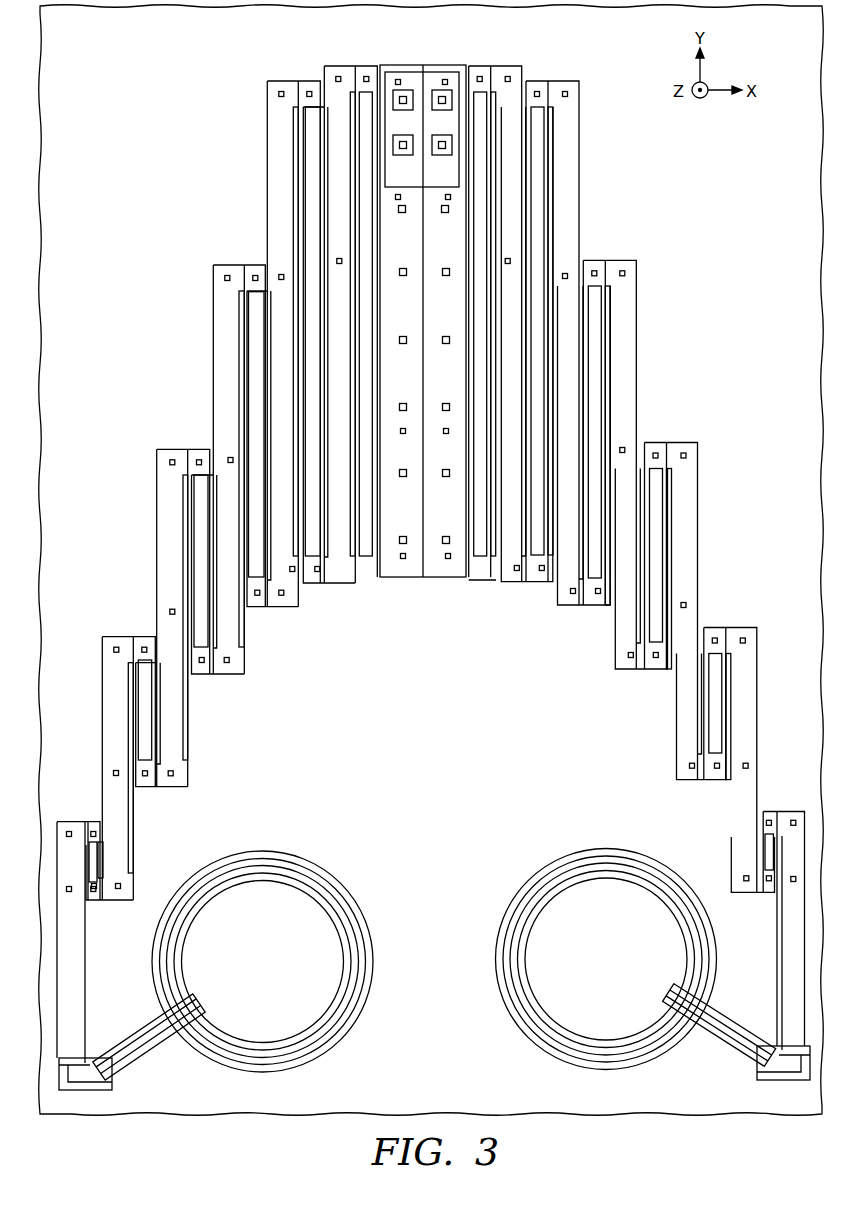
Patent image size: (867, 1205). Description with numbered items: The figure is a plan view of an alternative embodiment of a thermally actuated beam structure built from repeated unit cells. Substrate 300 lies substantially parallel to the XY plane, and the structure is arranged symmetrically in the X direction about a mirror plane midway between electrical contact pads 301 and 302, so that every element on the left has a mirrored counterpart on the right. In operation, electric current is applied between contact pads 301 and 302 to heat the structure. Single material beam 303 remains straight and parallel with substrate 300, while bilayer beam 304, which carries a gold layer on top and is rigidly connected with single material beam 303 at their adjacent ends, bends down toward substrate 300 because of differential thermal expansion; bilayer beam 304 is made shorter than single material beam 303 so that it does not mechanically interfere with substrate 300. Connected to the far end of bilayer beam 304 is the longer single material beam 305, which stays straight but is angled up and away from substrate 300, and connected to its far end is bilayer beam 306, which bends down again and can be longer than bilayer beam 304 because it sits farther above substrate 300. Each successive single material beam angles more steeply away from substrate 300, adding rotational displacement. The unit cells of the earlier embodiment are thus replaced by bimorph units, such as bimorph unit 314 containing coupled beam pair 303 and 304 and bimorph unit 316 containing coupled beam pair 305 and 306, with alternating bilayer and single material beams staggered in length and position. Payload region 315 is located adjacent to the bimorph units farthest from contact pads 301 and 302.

The substrate 300 is at (413, 736).
The electrical contact pad 301 is at (280, 972).
The electrical contact pad 302 is at (624, 970).
The single material beam 303 is at (86, 985).
The bilayer beam 304 is at (97, 858).
The single material beam 305 is at (104, 718).
The bilayer beam 306 is at (147, 637).
The bimorph unit 314 is at (129, 917).
The payload region 315 is at (431, 80).
The bimorph unit 316 is at (121, 727).